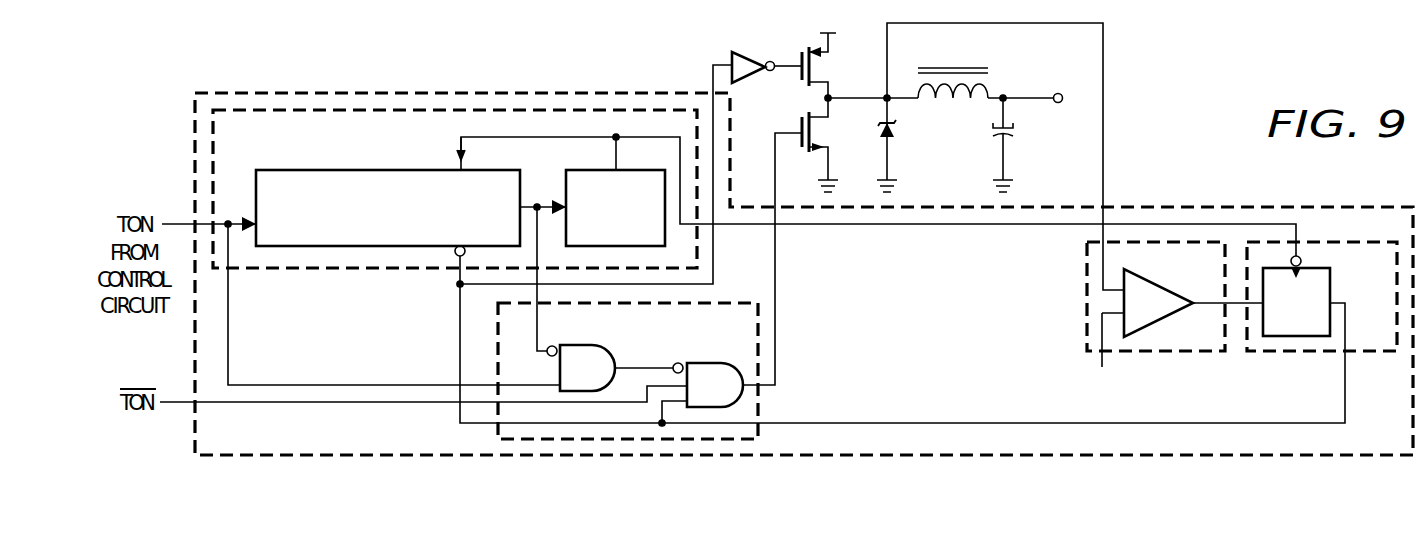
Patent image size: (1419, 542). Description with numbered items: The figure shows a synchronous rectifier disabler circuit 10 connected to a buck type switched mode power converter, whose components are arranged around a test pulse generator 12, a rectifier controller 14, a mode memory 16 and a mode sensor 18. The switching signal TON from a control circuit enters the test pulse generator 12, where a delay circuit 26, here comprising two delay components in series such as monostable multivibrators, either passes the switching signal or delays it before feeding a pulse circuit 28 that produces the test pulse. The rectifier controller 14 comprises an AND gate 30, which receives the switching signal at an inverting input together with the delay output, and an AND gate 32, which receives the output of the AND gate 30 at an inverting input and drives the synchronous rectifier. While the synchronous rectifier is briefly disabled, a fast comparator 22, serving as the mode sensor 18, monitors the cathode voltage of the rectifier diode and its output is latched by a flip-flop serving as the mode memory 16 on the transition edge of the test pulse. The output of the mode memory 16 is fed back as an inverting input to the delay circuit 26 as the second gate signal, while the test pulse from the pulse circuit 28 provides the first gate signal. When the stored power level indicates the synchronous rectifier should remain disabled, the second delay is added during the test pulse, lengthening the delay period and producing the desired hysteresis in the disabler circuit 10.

The disabler circuit 10 is at (938, 345).
The test pulse generator 12 is at (360, 270).
The rectifier controller 14 is at (730, 302).
The mode memory 16 is at (1330, 278).
The mode sensor 18 is at (1087, 303).
The fast comparator 22 is at (1165, 318).
The delay circuit 26 is at (395, 170).
The pulse circuit 28 is at (585, 170).
The AND gate 30 is at (612, 358).
The AND gate 32 is at (712, 363).